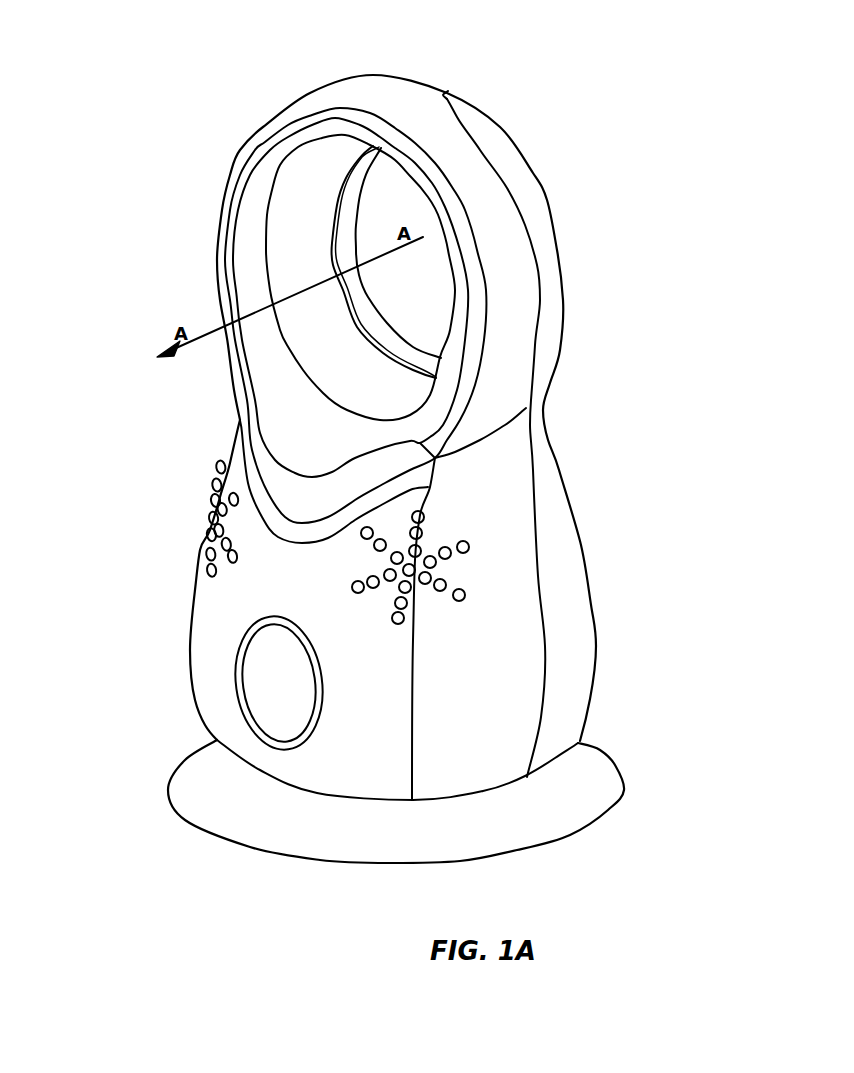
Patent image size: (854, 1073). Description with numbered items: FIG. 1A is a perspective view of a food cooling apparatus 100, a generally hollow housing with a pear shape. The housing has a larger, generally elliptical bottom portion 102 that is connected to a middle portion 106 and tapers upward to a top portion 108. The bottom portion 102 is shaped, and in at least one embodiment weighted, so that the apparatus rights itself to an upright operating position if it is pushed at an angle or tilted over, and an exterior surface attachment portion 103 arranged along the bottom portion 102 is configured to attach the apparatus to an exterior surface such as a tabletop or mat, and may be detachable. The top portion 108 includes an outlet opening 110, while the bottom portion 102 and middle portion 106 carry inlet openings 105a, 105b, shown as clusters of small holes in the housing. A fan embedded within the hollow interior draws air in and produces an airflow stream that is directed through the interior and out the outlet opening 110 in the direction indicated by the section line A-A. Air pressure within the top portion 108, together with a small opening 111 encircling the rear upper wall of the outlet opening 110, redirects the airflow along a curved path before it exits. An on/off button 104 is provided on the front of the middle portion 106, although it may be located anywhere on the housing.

The food cooling apparatus 100 is at (133, 45).
The bottom portion 102 is at (596, 666).
The exterior surface attachment portion 103 is at (622, 792).
The on/off button 104 is at (262, 668).
The inlet opening 105a is at (460, 580).
The inlet opening 105b is at (197, 537).
The middle portion 106 is at (557, 465).
The top portion 108 is at (410, 78).
The outlet opening 110 is at (387, 212).
The small opening 111 is at (355, 327).